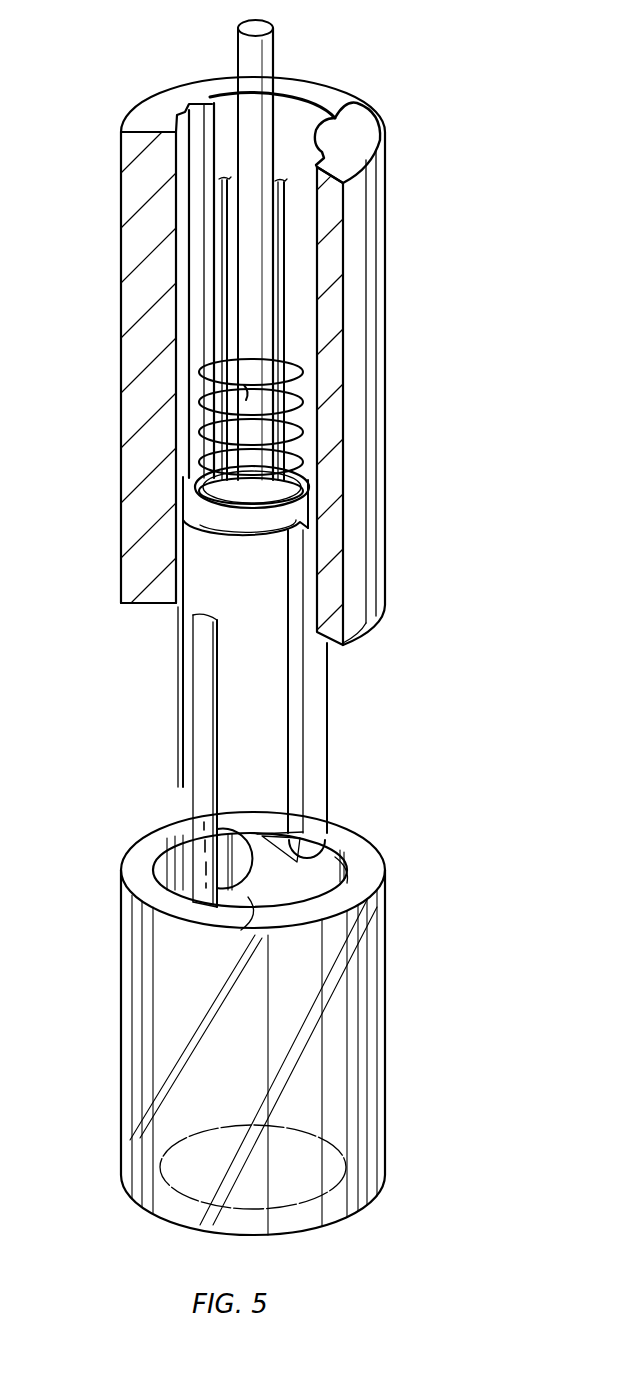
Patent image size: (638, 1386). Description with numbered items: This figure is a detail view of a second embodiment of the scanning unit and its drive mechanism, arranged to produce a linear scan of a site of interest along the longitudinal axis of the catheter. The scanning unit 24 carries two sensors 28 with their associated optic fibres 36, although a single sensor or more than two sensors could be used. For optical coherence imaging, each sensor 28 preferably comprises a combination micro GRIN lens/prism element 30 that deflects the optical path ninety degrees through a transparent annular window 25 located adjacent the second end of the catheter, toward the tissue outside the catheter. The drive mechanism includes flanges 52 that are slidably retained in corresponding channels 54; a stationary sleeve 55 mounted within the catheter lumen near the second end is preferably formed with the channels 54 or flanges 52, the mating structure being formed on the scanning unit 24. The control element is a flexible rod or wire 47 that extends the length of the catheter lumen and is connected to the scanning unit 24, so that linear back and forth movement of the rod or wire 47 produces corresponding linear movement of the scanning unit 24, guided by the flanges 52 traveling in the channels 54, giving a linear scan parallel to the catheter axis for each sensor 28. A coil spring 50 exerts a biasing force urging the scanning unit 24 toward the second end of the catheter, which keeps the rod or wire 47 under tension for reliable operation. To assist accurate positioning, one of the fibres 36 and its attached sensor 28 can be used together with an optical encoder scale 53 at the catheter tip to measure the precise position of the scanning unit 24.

The scanning unit 24 is at (270, 740).
The transparent annular window 25 is at (170, 1015).
The sensor 28 is at (233, 840).
The micro GRIN lens/prism element 30 is at (357, 883).
The optic fibres 36 is at (222, 255).
The flexible rod or wire 47 is at (254, 47).
The coil spring 50 is at (303, 388).
The flanges 52 is at (180, 680).
The optical encoder scale 53 is at (203, 730).
The channels 54 is at (190, 104).
The stationary sleeve 55 is at (362, 305).